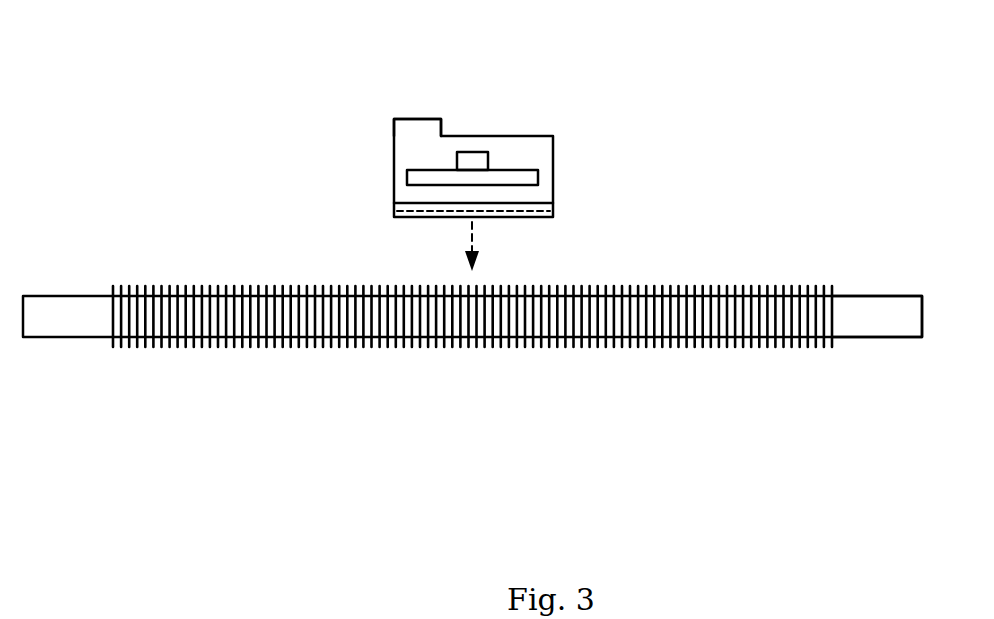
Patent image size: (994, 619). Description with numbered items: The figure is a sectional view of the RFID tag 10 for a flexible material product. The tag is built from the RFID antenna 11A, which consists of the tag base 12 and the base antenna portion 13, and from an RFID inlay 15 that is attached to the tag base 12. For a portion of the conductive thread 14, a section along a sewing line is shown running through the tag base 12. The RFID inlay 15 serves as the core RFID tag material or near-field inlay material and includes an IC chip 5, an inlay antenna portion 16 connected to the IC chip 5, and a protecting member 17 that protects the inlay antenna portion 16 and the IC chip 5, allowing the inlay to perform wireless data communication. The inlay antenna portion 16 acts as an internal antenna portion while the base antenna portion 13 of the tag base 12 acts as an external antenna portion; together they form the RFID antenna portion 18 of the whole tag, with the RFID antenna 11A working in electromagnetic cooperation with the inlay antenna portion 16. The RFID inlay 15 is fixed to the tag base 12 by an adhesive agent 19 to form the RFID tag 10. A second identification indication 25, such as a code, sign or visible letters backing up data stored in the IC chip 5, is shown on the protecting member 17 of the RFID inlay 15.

The RFID tag for a flexible material product 10 is at (789, 247).
The RFID antenna 11A is at (772, 453).
The tag base 12 is at (866, 320).
The base antenna portion 13 is at (786, 347).
The conductive thread 14 is at (465, 323).
The RFID inlay 15 is at (550, 108).
The inlay antenna portion 16 is at (412, 175).
The protecting member 17 is at (555, 178).
The RFID antenna portion 18 is at (236, 257).
The adhesive agent 19 is at (405, 213).
The second identification indication 25 is at (411, 127).
The IC chip 5 is at (470, 160).